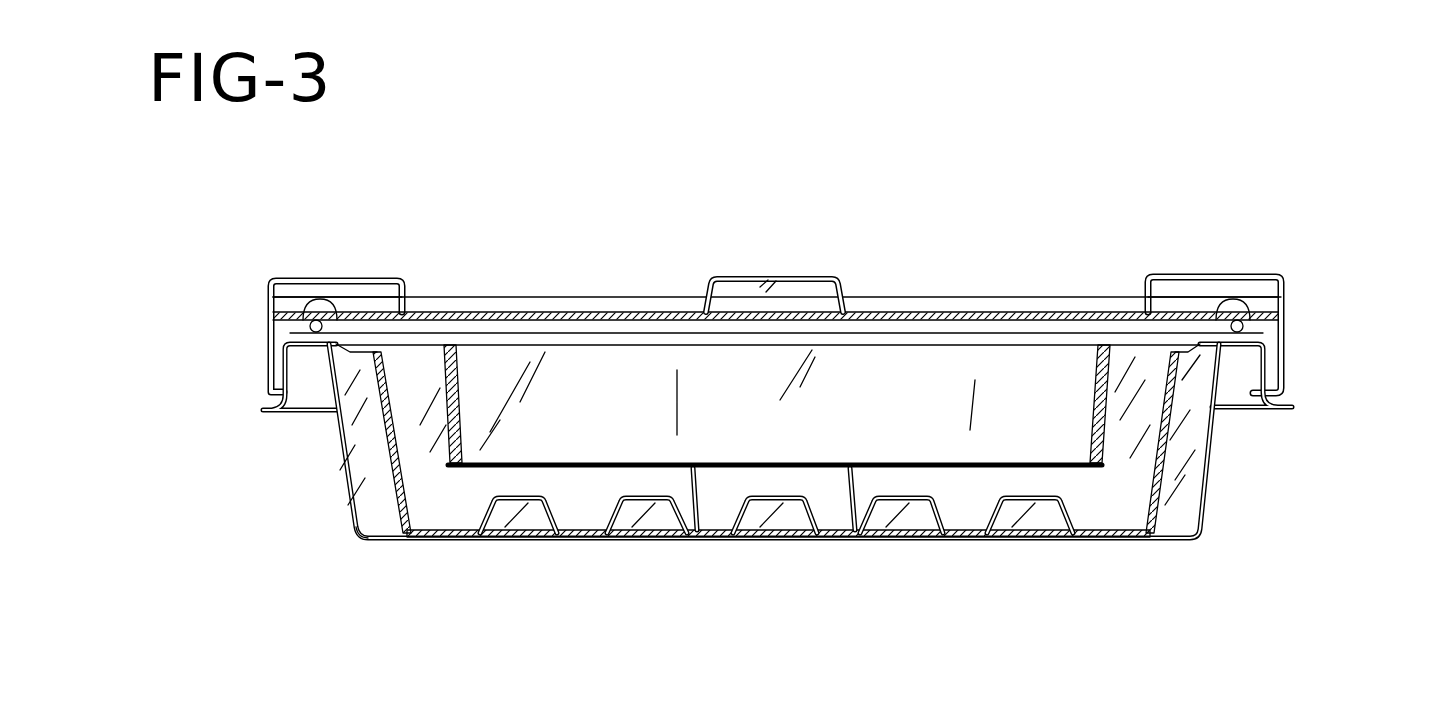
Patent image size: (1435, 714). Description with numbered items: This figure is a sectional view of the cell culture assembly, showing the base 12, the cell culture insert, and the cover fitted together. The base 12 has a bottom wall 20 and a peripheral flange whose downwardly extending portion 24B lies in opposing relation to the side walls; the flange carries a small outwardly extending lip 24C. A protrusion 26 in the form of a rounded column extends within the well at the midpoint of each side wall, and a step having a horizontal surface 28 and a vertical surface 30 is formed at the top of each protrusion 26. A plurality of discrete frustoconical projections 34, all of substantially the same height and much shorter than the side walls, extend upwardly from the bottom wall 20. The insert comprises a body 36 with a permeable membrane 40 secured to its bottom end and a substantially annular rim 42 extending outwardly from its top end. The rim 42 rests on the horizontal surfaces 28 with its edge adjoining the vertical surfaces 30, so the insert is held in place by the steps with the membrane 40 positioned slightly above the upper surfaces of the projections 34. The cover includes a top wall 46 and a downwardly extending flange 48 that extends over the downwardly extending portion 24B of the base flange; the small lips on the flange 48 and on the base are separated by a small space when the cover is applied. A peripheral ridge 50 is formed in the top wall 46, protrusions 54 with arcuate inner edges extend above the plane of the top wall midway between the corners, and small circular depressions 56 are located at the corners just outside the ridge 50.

The base 12 is at (1200, 548).
The bottom wall 20 is at (712, 540).
The downwardly extending portion 24B is at (1257, 395).
The lip 24C is at (1290, 408).
The protrusion 26 is at (402, 493).
The horizontal surface 28 is at (372, 348).
The vertical surface 30 is at (362, 350).
The frustoconical projections 34 is at (1003, 512).
The body 36 is at (440, 408).
The permeable membrane 40 is at (583, 468).
The annular rim 42 is at (1148, 300).
The top wall 46 is at (890, 297).
The flange 48 is at (1287, 335).
The peripheral ridge 50 is at (963, 297).
The protrusions 54 is at (288, 280).
The circular depressions 56 is at (320, 322).